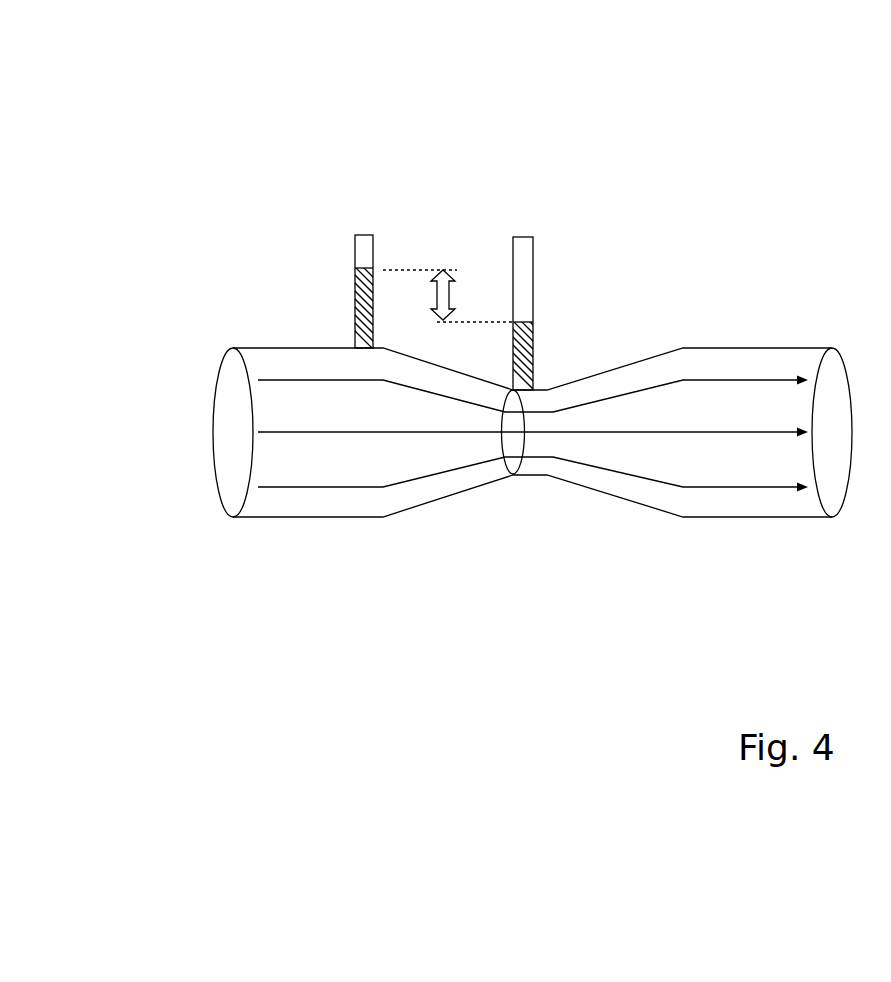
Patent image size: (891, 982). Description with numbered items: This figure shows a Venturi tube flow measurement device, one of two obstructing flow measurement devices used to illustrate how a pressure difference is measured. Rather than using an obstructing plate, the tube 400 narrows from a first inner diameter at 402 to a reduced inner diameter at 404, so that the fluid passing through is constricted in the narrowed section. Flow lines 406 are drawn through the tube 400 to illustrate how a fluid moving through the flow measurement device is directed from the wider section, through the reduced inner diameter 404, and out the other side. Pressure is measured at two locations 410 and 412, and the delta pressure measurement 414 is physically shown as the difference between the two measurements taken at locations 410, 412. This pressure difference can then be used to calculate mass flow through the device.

The tube 400 is at (728, 143).
The first inner diameter 402 is at (227, 413).
The reduced inner diameter 404 is at (509, 437).
The flow lines 406 is at (308, 382).
The pressure measurement location 410 is at (355, 248).
The pressure measurement location 412 is at (522, 260).
The delta pressure measurement 414 is at (445, 270).